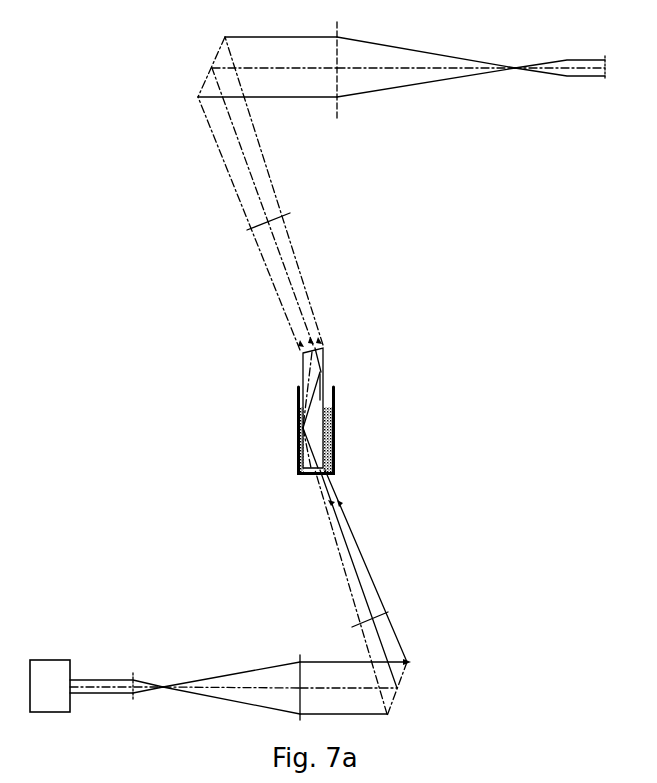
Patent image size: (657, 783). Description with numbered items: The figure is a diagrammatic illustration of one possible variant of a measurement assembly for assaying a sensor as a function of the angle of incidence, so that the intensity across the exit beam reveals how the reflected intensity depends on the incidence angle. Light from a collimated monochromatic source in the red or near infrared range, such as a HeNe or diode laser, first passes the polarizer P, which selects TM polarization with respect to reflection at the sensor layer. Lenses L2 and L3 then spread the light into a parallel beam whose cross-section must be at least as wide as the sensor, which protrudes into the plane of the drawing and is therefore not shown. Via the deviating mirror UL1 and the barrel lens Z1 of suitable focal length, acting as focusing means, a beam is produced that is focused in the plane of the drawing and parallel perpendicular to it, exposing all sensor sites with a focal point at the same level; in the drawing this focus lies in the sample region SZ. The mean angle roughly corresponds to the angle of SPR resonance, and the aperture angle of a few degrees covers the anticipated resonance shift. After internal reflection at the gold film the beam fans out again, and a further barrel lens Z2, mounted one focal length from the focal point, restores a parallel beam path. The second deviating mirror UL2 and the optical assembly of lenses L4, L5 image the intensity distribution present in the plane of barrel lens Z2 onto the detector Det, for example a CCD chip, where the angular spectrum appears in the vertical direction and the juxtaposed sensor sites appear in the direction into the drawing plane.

The polarizer P is at (73, 705).
The lens L2 is at (147, 668).
The lens L3 is at (290, 671).
The deviating mirror UL2 is at (434, 689).
The barrel lens Z1 is at (394, 604).
The sample cell SZ is at (348, 411).
The barrel lens Z2 is at (235, 236).
The deviating mirror UL1 is at (175, 64).
The lens L4 is at (338, 99).
The lens L5 is at (560, 103).
The detector Det is at (625, 48).